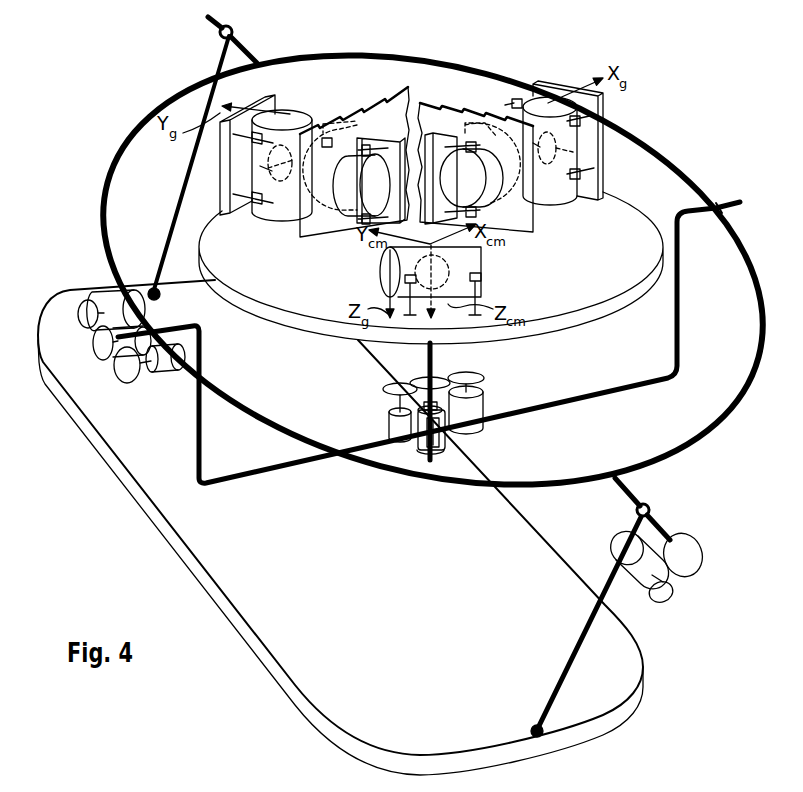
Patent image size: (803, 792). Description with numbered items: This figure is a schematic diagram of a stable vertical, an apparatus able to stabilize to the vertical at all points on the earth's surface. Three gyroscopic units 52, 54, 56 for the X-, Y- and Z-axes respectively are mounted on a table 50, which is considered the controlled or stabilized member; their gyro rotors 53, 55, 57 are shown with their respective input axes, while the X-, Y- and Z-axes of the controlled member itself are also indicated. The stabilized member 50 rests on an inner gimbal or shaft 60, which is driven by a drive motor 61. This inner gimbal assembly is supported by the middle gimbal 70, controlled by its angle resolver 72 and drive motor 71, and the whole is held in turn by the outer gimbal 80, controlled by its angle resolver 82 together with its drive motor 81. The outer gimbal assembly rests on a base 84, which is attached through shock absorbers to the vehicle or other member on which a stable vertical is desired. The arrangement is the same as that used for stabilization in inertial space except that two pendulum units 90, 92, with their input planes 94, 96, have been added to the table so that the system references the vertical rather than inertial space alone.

The table 50 is at (640, 213).
The gyroscopic unit 52 is at (557, 195).
The gyro rotor 53 is at (600, 156).
The gyroscopic unit 54 is at (282, 114).
The gyro rotor 55 is at (296, 112).
The gyroscopic unit 56 is at (483, 253).
The gyro rotor 57 is at (482, 268).
The inner gimbal or shaft 60 is at (438, 357).
The drive motor 61 is at (485, 404).
The middle gimbal 70 is at (210, 480).
The drive motor 71 is at (112, 289).
The angle resolver 72 is at (390, 421).
The outer gimbal 80 is at (393, 471).
The drive motor 81 is at (622, 550).
The angle resolver 82 is at (173, 372).
The base 84 is at (643, 673).
The pendulum unit 90 is at (474, 194).
The pendulum unit 92 is at (387, 197).
The input plane 94 is at (455, 108).
The input plane 96 is at (358, 112).